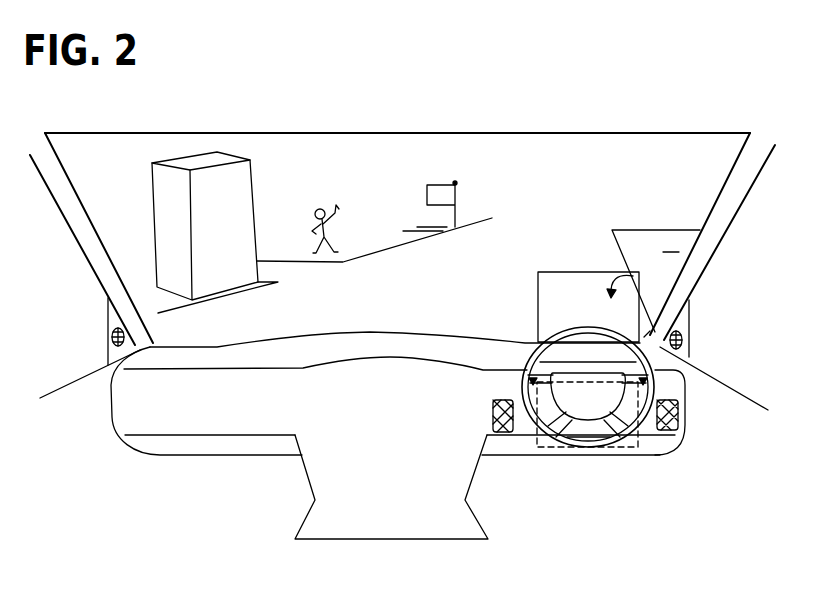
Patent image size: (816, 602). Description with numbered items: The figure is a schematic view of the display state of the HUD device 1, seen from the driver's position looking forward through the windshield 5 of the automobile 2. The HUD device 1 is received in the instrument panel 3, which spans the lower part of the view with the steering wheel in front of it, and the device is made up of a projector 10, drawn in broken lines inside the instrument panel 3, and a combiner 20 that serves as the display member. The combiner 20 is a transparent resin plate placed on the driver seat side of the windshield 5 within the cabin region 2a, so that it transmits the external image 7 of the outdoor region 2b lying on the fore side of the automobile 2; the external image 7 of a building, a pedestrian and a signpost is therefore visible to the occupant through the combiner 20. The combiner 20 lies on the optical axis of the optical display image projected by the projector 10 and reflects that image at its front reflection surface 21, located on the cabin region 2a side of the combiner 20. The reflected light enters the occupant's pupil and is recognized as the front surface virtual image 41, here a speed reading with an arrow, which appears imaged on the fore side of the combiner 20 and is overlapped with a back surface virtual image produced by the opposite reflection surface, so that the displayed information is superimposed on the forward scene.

The HUD device 1 is at (655, 338).
The automobile 2 is at (38, 173).
The cabin region 2a is at (603, 515).
The outdoor region 2b is at (378, 181).
The instrument panel 3 is at (152, 355).
The windshield 5 is at (637, 142).
The external image 7 is at (487, 193).
The projector 10 is at (645, 390).
The combiner 20 is at (652, 333).
The front reflection surface 21 is at (537, 297).
The front surface virtual image 41 is at (644, 338).